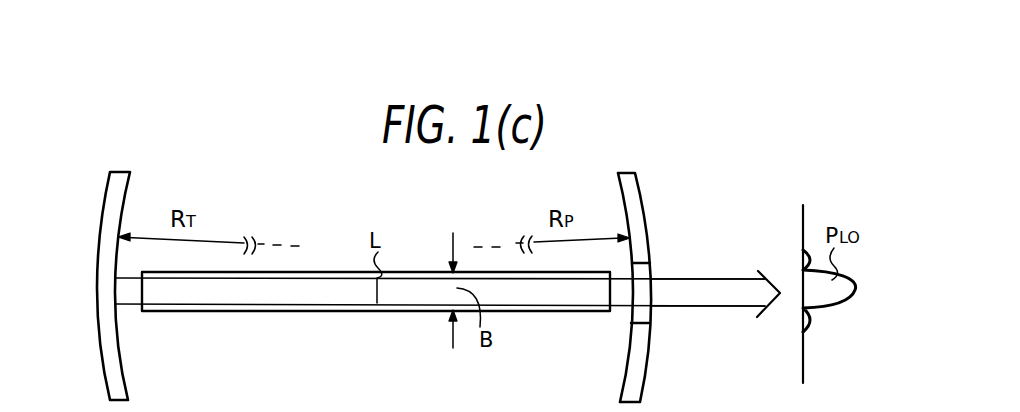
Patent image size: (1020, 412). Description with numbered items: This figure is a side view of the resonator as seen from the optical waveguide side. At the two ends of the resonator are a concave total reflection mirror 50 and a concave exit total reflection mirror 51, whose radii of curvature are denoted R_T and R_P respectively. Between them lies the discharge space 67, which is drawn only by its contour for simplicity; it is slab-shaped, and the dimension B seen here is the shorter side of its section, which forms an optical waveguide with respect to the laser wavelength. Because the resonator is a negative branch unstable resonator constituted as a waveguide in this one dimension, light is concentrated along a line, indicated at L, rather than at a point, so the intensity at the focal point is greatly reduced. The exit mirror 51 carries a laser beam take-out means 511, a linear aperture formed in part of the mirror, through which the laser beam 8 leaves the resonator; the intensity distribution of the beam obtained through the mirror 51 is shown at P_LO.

The total reflection mirror 50 is at (118, 192).
The exit total reflection mirror 51 is at (633, 192).
The laser beam take-out means 511 is at (645, 275).
The discharge space 67 is at (412, 272).
The laser beam 8 is at (685, 308).